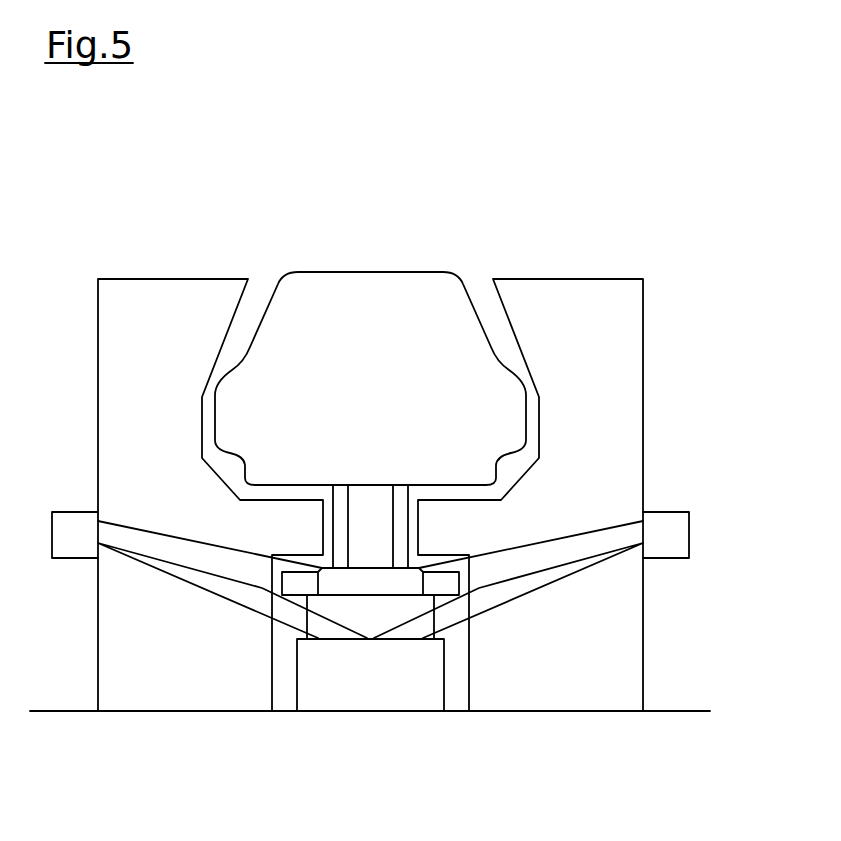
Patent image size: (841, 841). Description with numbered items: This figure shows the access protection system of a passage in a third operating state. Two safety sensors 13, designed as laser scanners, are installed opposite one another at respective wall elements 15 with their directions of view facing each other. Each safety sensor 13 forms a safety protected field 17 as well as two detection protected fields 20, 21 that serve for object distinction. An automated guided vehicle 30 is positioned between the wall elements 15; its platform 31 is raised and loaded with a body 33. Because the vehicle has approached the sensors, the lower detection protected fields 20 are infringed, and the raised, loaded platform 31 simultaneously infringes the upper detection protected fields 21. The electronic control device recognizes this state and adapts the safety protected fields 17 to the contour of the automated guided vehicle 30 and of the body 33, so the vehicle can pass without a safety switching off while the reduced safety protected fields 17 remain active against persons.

The safety sensor 13 is at (73, 522).
The wall element 15 is at (98, 333).
The safety protected field 17 is at (198, 306).
The detection protected field 20 is at (243, 593).
The detection protected field 21 is at (153, 543).
The automated guided vehicle 30 is at (407, 693).
The platform 31 is at (358, 582).
The body 33 is at (376, 365).